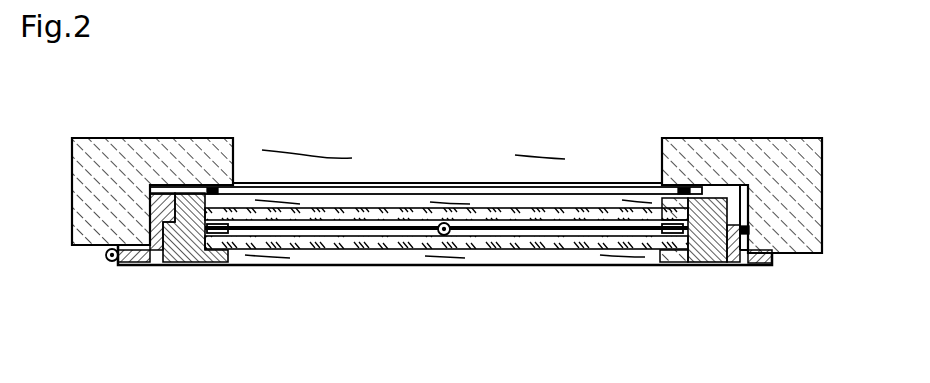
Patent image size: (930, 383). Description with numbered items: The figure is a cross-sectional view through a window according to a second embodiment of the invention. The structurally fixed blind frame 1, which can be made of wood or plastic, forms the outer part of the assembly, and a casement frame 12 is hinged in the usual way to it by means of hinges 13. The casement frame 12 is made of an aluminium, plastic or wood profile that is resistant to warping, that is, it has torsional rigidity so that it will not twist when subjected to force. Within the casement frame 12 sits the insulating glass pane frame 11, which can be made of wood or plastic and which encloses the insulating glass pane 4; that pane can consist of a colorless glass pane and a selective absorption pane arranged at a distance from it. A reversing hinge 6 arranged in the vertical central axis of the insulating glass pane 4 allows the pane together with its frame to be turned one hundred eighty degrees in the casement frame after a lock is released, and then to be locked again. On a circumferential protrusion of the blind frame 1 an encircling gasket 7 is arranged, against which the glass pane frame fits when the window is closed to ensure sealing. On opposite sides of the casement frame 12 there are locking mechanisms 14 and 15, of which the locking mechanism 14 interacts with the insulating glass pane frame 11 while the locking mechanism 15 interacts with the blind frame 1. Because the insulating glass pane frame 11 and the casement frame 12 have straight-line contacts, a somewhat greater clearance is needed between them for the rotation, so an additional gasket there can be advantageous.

The blind frame 1 is at (785, 183).
The insulating glass pane 4 is at (547, 238).
The reversing hinge 6 is at (445, 236).
The encircling gasket 7 is at (688, 186).
The insulating glass pane frame 11 is at (690, 264).
The casement frame 12 is at (748, 265).
The hinges 13 is at (111, 261).
The locking mechanism 14 is at (175, 222).
The locking mechanism 15 is at (745, 226).